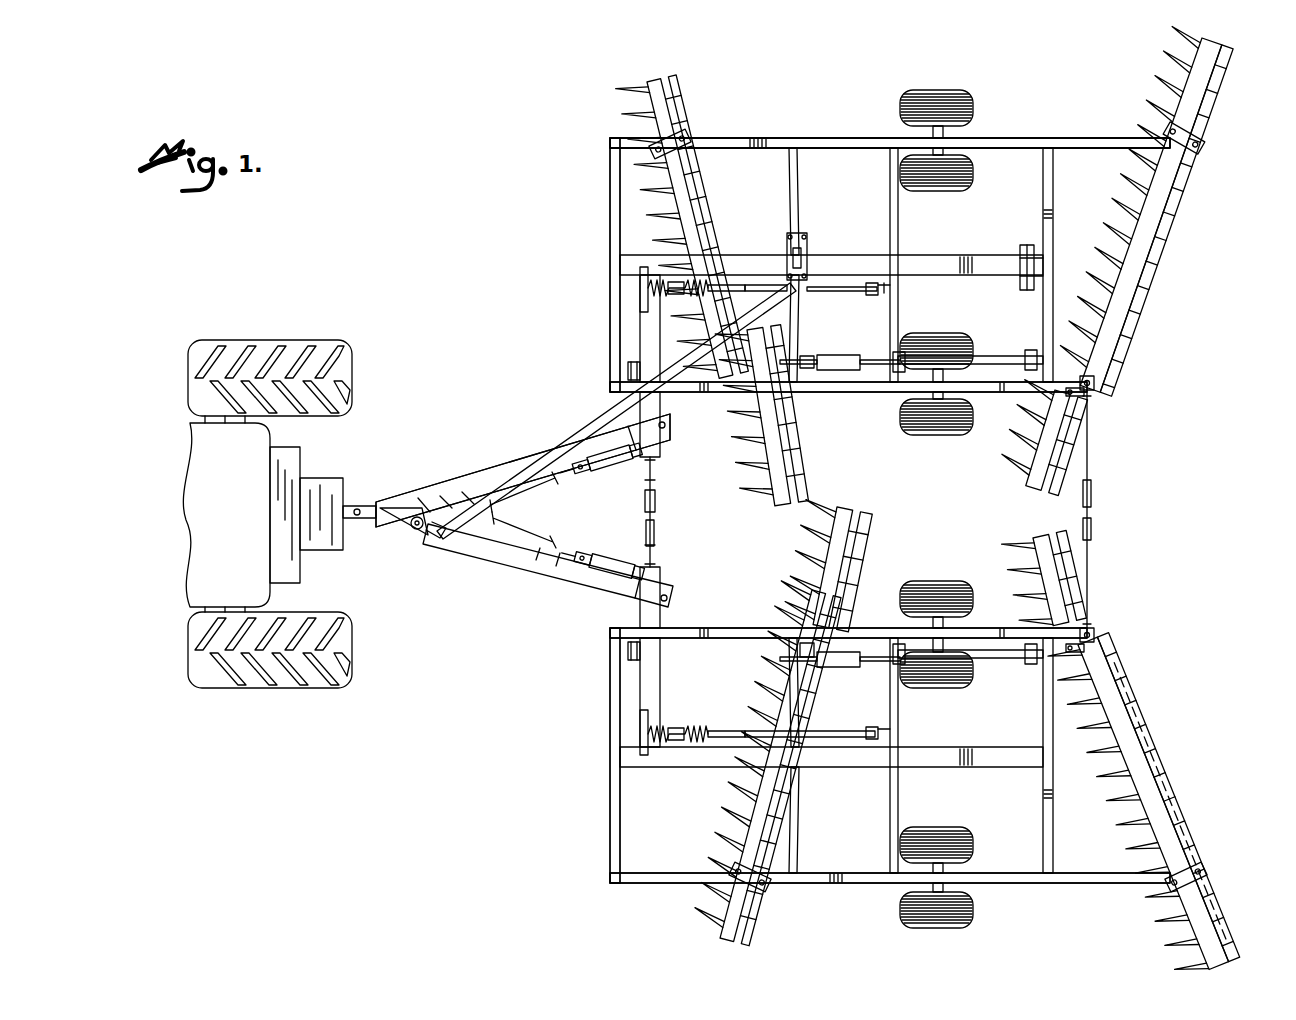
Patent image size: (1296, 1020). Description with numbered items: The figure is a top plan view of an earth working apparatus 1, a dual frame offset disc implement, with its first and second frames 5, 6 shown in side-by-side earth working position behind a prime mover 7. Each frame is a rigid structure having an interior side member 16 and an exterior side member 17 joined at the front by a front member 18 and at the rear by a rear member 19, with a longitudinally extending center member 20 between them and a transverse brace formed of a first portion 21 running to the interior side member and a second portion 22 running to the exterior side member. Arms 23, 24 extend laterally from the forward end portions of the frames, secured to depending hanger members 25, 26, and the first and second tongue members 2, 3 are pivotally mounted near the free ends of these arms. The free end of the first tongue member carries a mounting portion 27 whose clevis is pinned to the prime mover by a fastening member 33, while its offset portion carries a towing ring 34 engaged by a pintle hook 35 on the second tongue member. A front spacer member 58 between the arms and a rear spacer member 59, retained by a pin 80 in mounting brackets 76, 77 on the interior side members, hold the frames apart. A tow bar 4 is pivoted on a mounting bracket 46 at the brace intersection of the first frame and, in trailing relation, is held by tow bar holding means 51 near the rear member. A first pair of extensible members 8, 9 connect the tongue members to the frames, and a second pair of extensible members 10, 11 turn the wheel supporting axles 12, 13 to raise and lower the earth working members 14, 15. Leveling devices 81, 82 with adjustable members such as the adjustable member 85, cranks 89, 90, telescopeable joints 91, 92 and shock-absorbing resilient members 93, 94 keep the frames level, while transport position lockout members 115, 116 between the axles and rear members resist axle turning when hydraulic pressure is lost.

The earth working apparatus 1 is at (472, 262).
The first tongue member 2 is at (480, 480).
The second tongue member 3 is at (515, 556).
The tow bar 4 is at (582, 428).
The first frame 5 is at (1000, 132).
The second frame 6 is at (1022, 884).
The prime mover 7 is at (312, 480).
The extensible member 8 is at (596, 464).
The extensible member 9 is at (608, 556).
The extensible member 10 is at (838, 362).
The extensible member 11 is at (840, 668).
The wheel supporting axle 12 is at (898, 214).
The wheel supporting axle 13 is at (890, 786).
The earth working members 14 is at (666, 78).
The earth working members 15 is at (1000, 550).
The interior side member 16 is at (846, 392).
The exterior side member 17 is at (796, 137).
The front member 18 is at (612, 184).
The rear member 19 is at (1053, 180).
The center member 20 is at (948, 258).
The first portion of brace member 21 is at (797, 316).
The second portion of brace member 22 is at (797, 178).
The arm 23 is at (640, 332).
The arm 24 is at (640, 686).
The hanger member 25 is at (628, 372).
The hanger member 26 is at (628, 652).
The mounting portion 27 is at (410, 498).
The fastening member 33 is at (356, 520).
The towing ring 34 is at (412, 532).
The pintle hook 35 is at (424, 534).
The mounting bracket 46 is at (806, 238).
The tow bar holding means 51 is at (1024, 244).
The front spacer member 58 is at (656, 524).
The rear spacer member 59 is at (1093, 474).
The mounting bracket 76 is at (1090, 392).
The mounting bracket 77 is at (1092, 642).
The pin 80 is at (1096, 380).
The leveling device 81 is at (763, 282).
The leveling device 82 is at (742, 742).
The adjustable member 85 is at (836, 292).
The crank 89 is at (640, 286).
The crank 90 is at (640, 734).
The telescopeable joint 91 is at (716, 296).
The telescopeable joint 92 is at (712, 732).
The resilient members 93 is at (680, 282).
The resilient members 94 is at (696, 740).
The transport position lockout member 115 is at (988, 356).
The transport position lockout member 116 is at (982, 664).